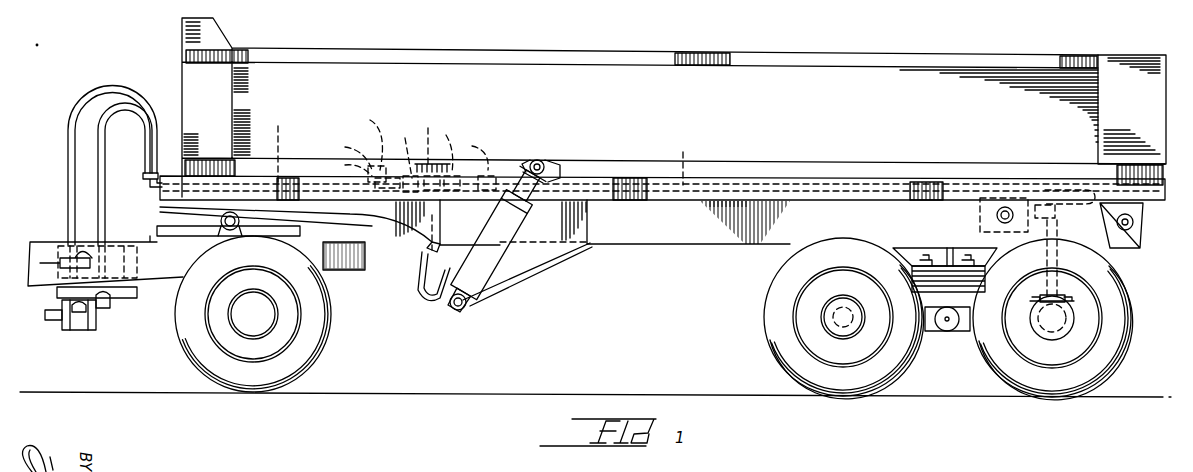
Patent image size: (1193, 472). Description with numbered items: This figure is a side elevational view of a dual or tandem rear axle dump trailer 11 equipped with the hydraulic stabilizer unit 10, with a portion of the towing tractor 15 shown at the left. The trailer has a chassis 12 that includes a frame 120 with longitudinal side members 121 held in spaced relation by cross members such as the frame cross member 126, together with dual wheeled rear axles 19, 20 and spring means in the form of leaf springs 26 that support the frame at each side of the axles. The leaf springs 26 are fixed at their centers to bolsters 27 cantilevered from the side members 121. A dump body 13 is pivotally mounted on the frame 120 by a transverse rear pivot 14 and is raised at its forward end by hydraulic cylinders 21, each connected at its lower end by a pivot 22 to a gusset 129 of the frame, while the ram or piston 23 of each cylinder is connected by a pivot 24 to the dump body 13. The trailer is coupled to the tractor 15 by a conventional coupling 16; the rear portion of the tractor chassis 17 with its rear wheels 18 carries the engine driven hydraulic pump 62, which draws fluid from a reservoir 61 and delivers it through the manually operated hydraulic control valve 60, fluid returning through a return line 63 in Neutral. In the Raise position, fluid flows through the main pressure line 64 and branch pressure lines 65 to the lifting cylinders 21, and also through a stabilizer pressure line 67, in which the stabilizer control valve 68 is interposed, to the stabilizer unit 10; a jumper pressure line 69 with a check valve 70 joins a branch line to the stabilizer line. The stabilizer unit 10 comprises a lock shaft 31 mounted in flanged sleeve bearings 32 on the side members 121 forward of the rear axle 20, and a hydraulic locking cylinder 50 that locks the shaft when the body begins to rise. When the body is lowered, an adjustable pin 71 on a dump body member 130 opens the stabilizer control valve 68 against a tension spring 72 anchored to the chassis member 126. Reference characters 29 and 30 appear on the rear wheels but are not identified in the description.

The hydraulic stabilizer unit 10 is at (1016, 202).
The dump trailer 11 is at (795, 50).
The chassis 12 is at (808, 194).
The dump body 13 is at (925, 80).
The transverse rear pivot 14 is at (1138, 222).
The tractor 15 is at (352, 268).
The coupling 16 is at (250, 215).
The chassis of the tractor 17 is at (48, 238).
The rear wheels 18 is at (322, 333).
The rear axle 19 is at (840, 325).
The rear axle 20 is at (1052, 322).
The hydraulic cylinders 21 is at (526, 220).
The pivot 22 is at (466, 310).
The ram or piston 23 is at (533, 158).
The pivot 24 is at (544, 165).
The leaf springs 26 is at (920, 268).
The bolsters 27 is at (955, 266).
The tire 29 is at (846, 390).
The tire 30 is at (1068, 384).
The lock shaft 31 is at (992, 205).
The flanged sleeve bearings 32 is at (985, 210).
The hydraulic locking cylinder 50 is at (1046, 240).
The hydraulic control valve 60 is at (60, 290).
The reservoir 61 is at (128, 298).
The hydraulic pump 62 is at (84, 330).
The return line 63 is at (103, 310).
The main pressure line 64 is at (286, 144).
The branch pressure lines 65 is at (430, 302).
The stabilizer pressure line 67 is at (521, 145).
The stabilizer control valve 68 is at (401, 158).
The jumper pressure line 69 is at (448, 154).
The check valve 70 is at (473, 162).
The adjustable pin 71 is at (347, 164).
The tension spring 72 is at (431, 151).
The frame 120 is at (744, 255).
The side members 121 is at (668, 234).
The frame cross member 126 is at (432, 250).
The gusset 129 is at (527, 275).
The dump body member 130 is at (352, 155).